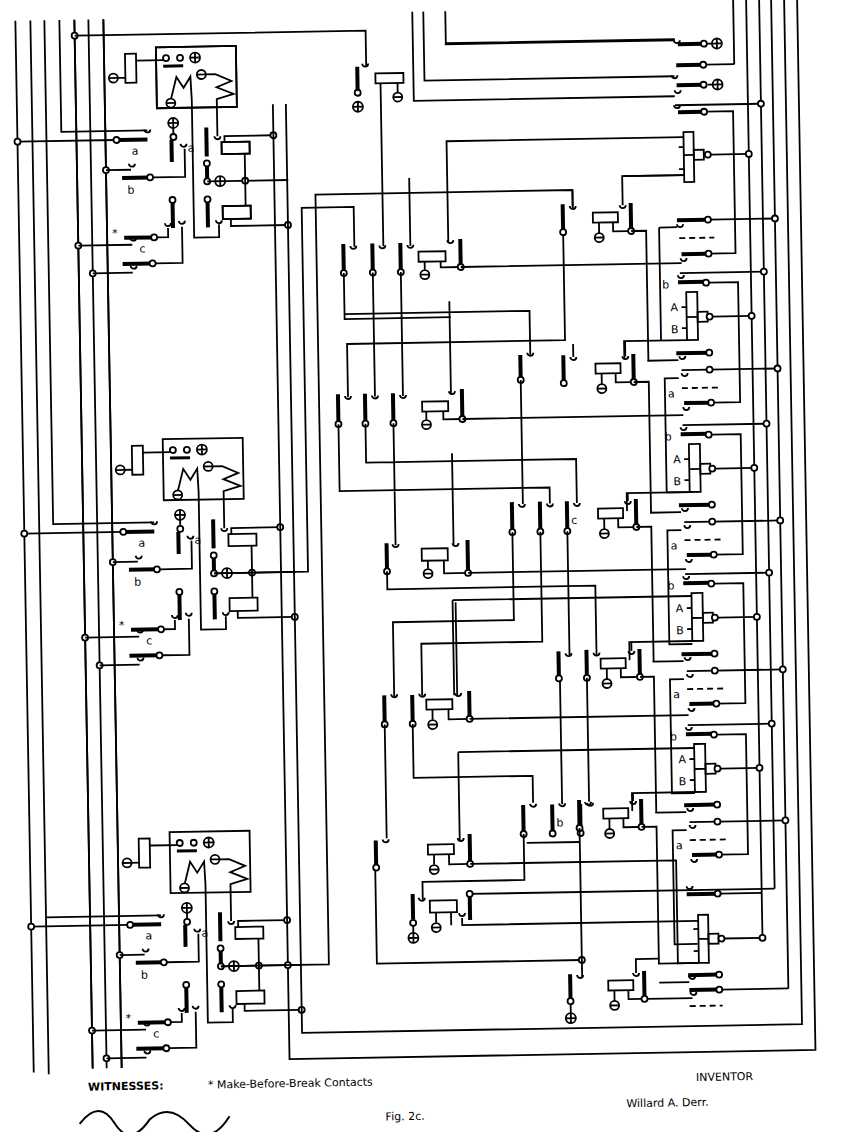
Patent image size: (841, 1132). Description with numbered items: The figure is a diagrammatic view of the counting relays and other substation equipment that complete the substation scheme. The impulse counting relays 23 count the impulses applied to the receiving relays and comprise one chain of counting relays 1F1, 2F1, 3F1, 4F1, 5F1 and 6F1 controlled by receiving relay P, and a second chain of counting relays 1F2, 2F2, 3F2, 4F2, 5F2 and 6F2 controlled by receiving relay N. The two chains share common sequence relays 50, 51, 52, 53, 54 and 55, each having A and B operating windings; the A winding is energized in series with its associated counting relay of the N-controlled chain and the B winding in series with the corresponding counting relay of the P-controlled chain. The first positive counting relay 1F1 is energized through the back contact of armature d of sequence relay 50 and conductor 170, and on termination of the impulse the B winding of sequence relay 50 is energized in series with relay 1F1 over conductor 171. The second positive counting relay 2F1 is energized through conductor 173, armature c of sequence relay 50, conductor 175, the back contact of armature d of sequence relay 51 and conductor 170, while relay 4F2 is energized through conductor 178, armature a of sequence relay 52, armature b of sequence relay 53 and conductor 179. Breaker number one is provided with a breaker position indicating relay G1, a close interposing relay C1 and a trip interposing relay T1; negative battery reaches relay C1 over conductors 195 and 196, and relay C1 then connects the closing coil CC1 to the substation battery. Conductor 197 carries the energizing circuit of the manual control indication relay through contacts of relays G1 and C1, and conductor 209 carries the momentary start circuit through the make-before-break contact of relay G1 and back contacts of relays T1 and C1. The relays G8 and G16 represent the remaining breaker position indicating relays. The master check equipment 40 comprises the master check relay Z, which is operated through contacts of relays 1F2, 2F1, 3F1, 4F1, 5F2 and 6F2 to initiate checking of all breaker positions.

The master check equipment 40 is at (352, 70).
The master check relay Z is at (397, 82).
The closing coil CC1 is at (196, 77).
The breaker position indicating relay G1 is at (131, 86).
The close interposing relay C1 is at (236, 158).
The trip interposing relay T1 is at (247, 216).
The conductor 196 is at (262, 133).
The conductor 195 is at (270, 400).
The conductor 197 is at (104, 361).
The conductor 209 is at (73, 584).
The breaker position indicating relay G8 is at (141, 450).
The breaker position indicating relay G16 is at (134, 848).
The counting relay 6F2 is at (440, 259).
The counting relay 5F2 is at (440, 413).
The counting relay 4F2 is at (436, 558).
The counting relay 3F2 is at (440, 719).
The counting relay 2F2 is at (434, 854).
The counting relay 1F2 is at (440, 932).
The counting relay 6F1 is at (609, 223).
The counting relay 5F1 is at (608, 374).
The counting relay 4F1 is at (608, 519).
The counting relay 3F1 is at (616, 669).
The counting relay 2F1 is at (609, 819).
The counting relay 1F1 is at (606, 991).
The sequence relay 55 is at (695, 155).
The sequence relay 54 is at (694, 306).
The sequence relay 53 is at (694, 458).
The sequence relay 52 is at (694, 607).
The sequence relay 51 is at (694, 758).
The sequence relay 50 is at (693, 930).
The impulse counting relays 23 is at (557, 413).
The conductor 178 is at (466, 563).
The conductor 179 is at (733, 25).
The conductor 175 is at (655, 880).
The conductor 173 is at (641, 951).
The conductor 171 is at (732, 955).
The conductor 170 is at (727, 1003).